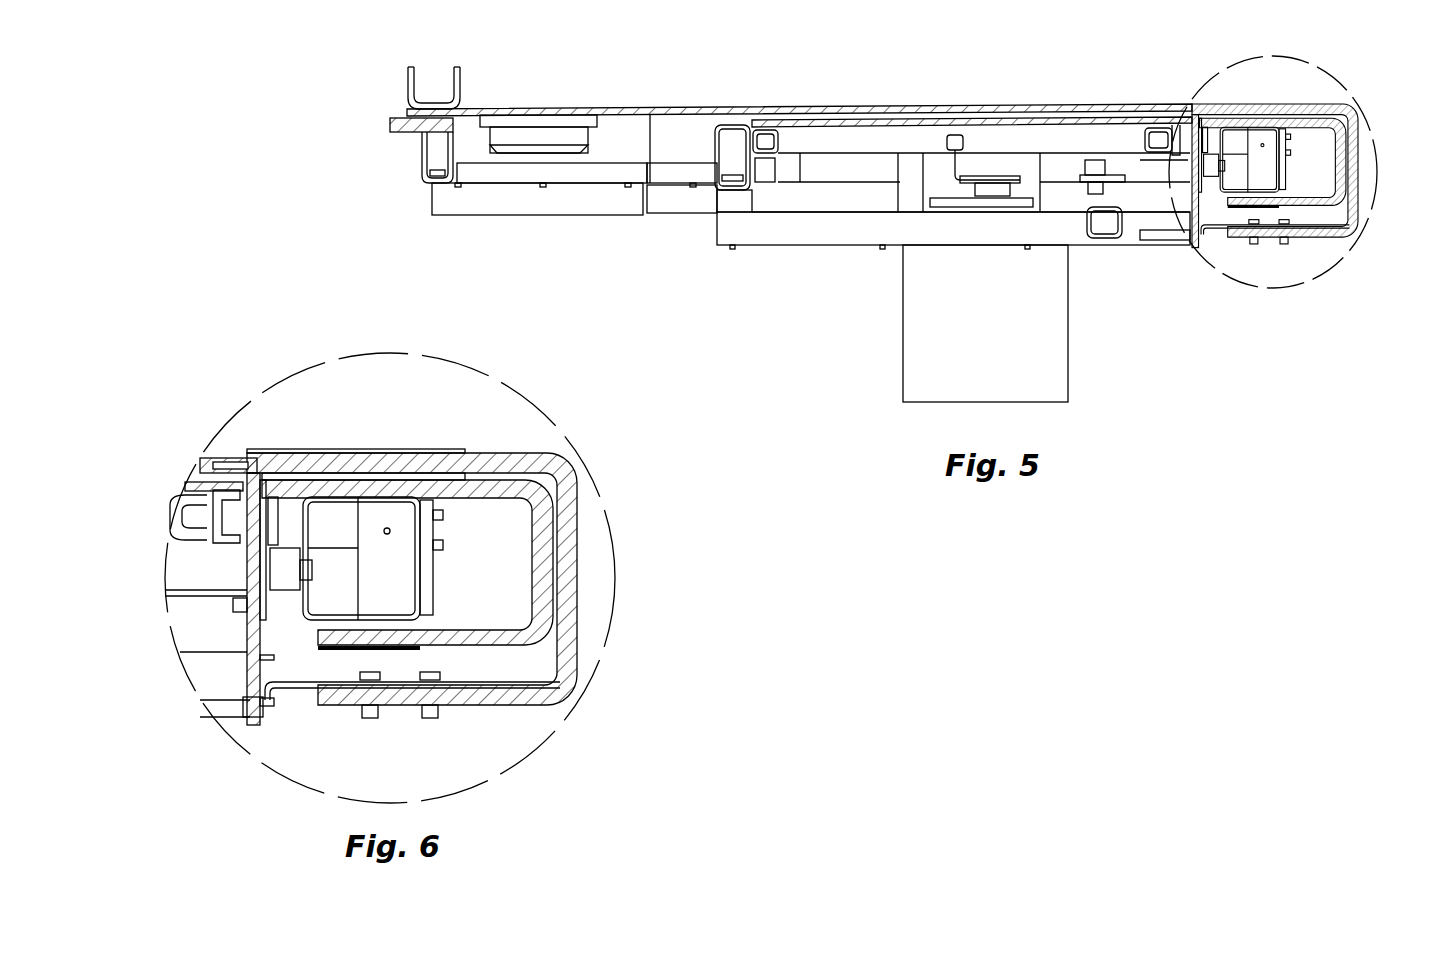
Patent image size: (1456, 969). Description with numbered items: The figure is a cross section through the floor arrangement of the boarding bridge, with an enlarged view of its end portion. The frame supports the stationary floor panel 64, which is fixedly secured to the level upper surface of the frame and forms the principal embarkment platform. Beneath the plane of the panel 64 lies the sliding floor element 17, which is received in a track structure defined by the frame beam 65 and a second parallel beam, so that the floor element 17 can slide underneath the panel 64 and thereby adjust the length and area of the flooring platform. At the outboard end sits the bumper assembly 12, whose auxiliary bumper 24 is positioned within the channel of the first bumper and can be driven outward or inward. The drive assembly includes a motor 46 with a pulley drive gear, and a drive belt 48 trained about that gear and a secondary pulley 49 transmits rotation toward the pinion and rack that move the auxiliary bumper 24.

In FIG. 5, the bumper assembly 12 is at (1360, 185).
In FIG. 6, the bumper assembly 12 is at (577, 560).
In FIG. 5, the floor element 17 is at (855, 115).
In FIG. 6, the floor element 17 is at (195, 470).
In FIG. 5, the auxiliary bumper 24 is at (1332, 207).
In FIG. 6, the auxiliary bumper 24 is at (520, 640).
In FIG. 5, the motor 46 is at (1000, 207).
In FIG. 5, the drive belt 48 is at (1152, 158).
In FIG. 6, the secondary pulley 49 is at (247, 628).
In FIG. 5, the stationary floor panel 64 is at (974, 106).
In FIG. 6, the stationary floor panel 64 is at (395, 452).
In FIG. 5, the frame beam 65 is at (740, 110).